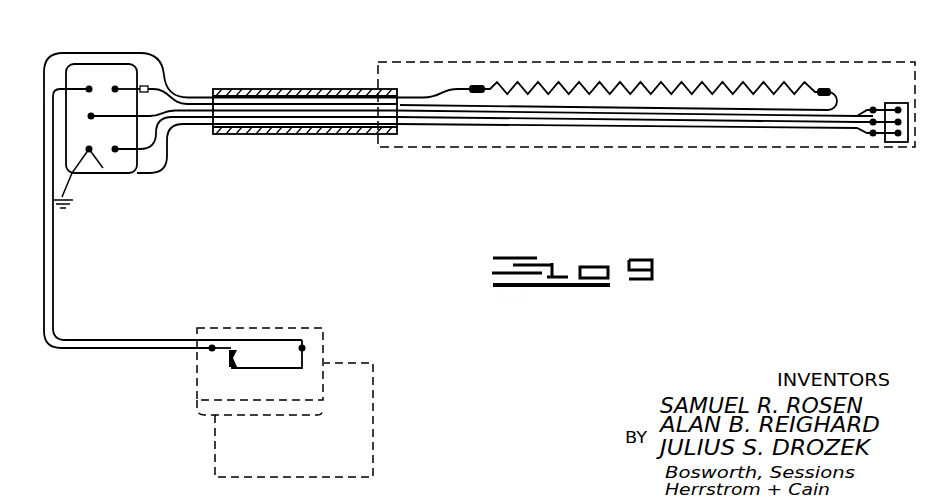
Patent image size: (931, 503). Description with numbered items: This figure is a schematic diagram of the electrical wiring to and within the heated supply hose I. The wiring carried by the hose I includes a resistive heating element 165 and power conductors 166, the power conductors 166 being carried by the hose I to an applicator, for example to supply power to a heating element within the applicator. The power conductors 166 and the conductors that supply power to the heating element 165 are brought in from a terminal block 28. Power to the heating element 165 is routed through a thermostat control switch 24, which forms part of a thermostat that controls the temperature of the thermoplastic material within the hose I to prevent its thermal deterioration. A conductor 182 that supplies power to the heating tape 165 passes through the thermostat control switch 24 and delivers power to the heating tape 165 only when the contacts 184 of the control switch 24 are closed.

The terminal block 28 is at (113, 73).
The conductor 182 is at (92, 339).
The contacts 184 is at (222, 358).
The thermostat control switch 24 is at (367, 362).
The resistive heating element 165 is at (545, 83).
The power conductors 166 is at (647, 128).
The hose I is at (688, 62).